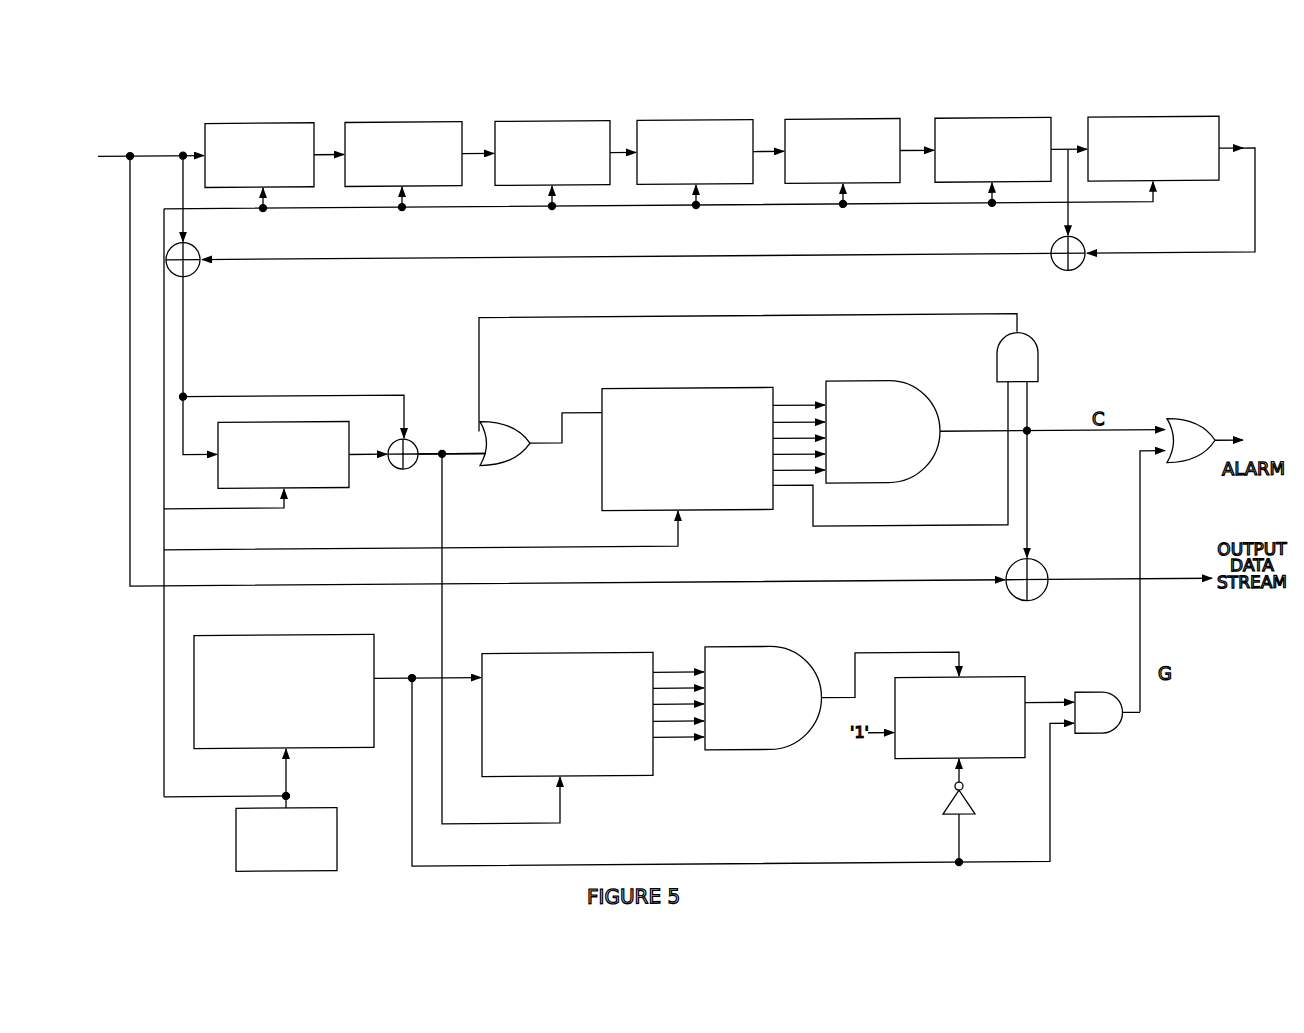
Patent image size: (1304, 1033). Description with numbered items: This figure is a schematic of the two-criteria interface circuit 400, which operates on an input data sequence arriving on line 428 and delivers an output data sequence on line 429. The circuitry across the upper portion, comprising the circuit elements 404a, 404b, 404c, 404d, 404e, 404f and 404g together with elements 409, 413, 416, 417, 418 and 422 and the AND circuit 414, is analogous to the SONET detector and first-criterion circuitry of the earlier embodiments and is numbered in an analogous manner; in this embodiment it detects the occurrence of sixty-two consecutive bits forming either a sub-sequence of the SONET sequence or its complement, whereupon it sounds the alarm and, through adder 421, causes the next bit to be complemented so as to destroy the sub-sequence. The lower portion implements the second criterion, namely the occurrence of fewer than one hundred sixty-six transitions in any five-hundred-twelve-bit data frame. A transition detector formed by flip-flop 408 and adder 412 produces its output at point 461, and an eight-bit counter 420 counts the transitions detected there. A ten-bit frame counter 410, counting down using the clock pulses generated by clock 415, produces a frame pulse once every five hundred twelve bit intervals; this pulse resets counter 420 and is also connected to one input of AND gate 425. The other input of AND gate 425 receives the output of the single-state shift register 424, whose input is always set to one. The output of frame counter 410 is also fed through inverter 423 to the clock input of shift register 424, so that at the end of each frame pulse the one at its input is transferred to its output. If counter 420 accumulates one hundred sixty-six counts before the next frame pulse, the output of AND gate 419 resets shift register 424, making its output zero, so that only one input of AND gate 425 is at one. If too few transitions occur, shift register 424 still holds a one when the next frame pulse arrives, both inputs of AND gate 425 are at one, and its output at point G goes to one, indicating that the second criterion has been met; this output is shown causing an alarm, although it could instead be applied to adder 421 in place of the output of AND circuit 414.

The interface circuit 400 is at (1127, 85).
The flip-flop shift register stage 404a is at (234, 160).
The flip-flop shift register stage 404b is at (377, 160).
The flip-flop shift register stage 404c is at (526, 160).
The flip-flop shift register stage 404d is at (669, 160).
The flip-flop shift register stage 404e is at (816, 160).
The flip-flop shift register stage 404f is at (967, 160).
The flip-flop shift register stage 404g is at (1127, 160).
The flip-flop 408 is at (262, 457).
The exclusive-OR gate 409 is at (1078, 270).
The frame counter 410 is at (262, 717).
The adder 412 is at (413, 446).
The counter 413 is at (699, 477).
The AND circuit 414 is at (850, 453).
The clock 415 is at (286, 840).
The OR gate 416 is at (1191, 443).
The exclusive-OR gate 417 is at (194, 270).
The OR gate 418 is at (504, 441).
The AND gate 419 is at (733, 718).
The counter 420 is at (533, 742).
The adder 421 is at (1012, 579).
The AND gate 422 is at (1034, 372).
The inverter 423 is at (950, 814).
The shift register 424 is at (974, 735).
The AND gate 425 is at (1115, 733).
The line 428 is at (140, 152).
The line 429 is at (1068, 585).
The point 461 is at (472, 464).